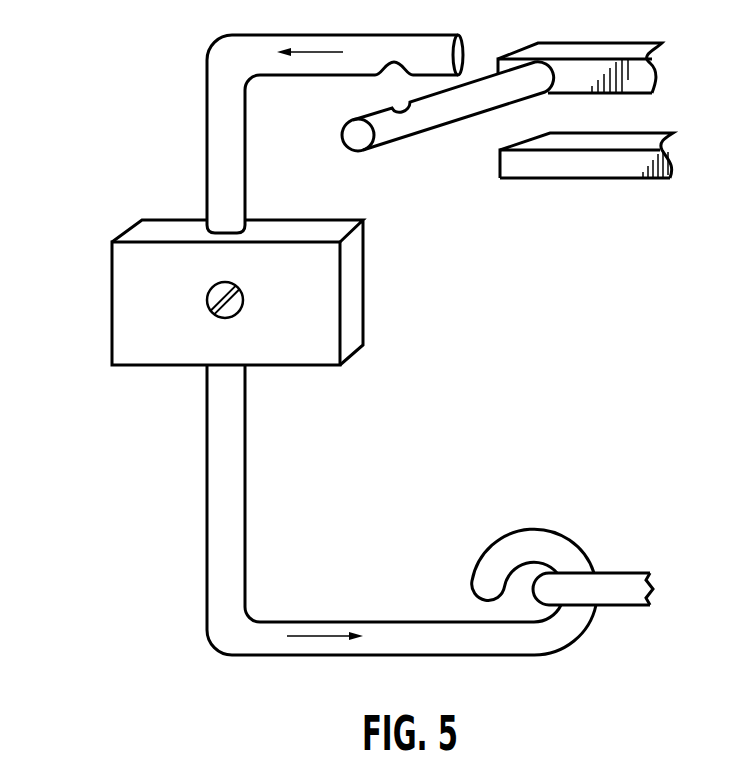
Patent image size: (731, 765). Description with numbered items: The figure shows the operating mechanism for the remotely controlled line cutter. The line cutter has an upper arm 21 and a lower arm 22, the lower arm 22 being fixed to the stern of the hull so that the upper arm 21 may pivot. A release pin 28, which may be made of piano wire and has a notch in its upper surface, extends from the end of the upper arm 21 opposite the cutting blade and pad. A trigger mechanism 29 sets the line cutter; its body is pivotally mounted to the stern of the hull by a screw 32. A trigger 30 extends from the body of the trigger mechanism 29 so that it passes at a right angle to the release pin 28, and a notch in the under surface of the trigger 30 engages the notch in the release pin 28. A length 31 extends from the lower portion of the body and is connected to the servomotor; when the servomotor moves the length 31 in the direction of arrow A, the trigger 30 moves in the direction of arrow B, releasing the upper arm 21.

The upper arm 21 is at (635, 73).
The lower arm 22 is at (577, 170).
The release pin 28 is at (447, 115).
The trigger mechanism 29 is at (137, 330).
The trigger 30 is at (237, 187).
The length 31 is at (568, 630).
The screw 32 is at (241, 313).